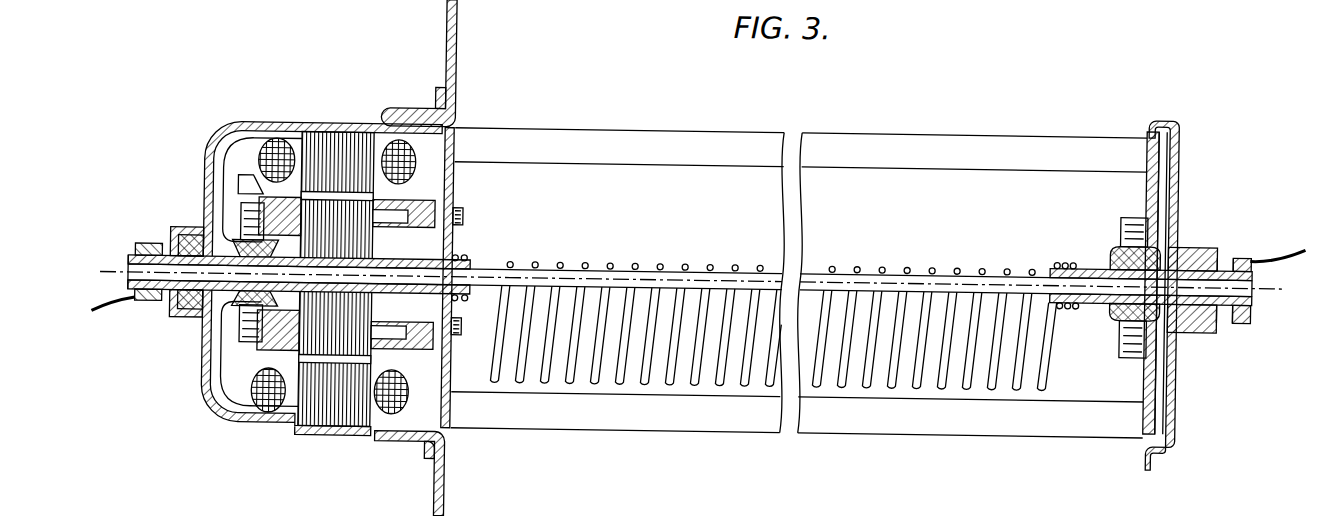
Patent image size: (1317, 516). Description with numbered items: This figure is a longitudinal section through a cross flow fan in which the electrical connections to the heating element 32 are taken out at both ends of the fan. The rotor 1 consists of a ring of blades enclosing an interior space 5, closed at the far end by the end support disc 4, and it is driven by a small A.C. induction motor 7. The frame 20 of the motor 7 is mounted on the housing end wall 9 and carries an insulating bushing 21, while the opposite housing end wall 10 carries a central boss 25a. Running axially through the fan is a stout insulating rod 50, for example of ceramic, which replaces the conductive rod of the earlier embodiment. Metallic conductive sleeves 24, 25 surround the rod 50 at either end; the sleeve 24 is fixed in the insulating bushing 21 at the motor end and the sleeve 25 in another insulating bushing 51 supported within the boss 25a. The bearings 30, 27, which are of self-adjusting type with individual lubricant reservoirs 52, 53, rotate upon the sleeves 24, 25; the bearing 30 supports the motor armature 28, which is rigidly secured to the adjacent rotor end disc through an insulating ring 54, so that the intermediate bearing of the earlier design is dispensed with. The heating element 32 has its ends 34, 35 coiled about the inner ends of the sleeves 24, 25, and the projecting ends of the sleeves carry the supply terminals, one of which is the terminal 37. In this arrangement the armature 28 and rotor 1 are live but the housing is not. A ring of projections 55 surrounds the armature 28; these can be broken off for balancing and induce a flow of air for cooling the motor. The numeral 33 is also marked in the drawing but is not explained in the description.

The rotor 1 is at (880, 408).
The end support disc 4 is at (1145, 162).
The interior space 5 is at (931, 218).
The electric motor 7 is at (364, 122).
The housing end wall 9 is at (437, 498).
The housing end wall 10 is at (1168, 122).
The motor frame 20 is at (203, 385).
The insulating bushing 21 is at (163, 316).
The metallic sleeve 24 is at (145, 253).
The metallic sleeve 25 is at (1225, 247).
The central boss 25a is at (1213, 322).
The sinter bearing 27 is at (1112, 250).
The motor armature 28 is at (334, 126).
The sinter bearing 30 is at (229, 196).
The heating element 32 is at (711, 396).
The spring coils 33 is at (628, 388).
The end of heating element 34 is at (475, 300).
The end of heating element 35 is at (1077, 299).
The supply terminal 37 is at (1292, 246).
The insulating rod 50 is at (622, 277).
The insulating bushing 51 is at (1208, 230).
The lubricant reservoir 52 is at (262, 182).
The lubricant reservoir 53 is at (1133, 208).
The insulating ring 54 is at (455, 162).
The ring of projections 55 is at (232, 381).